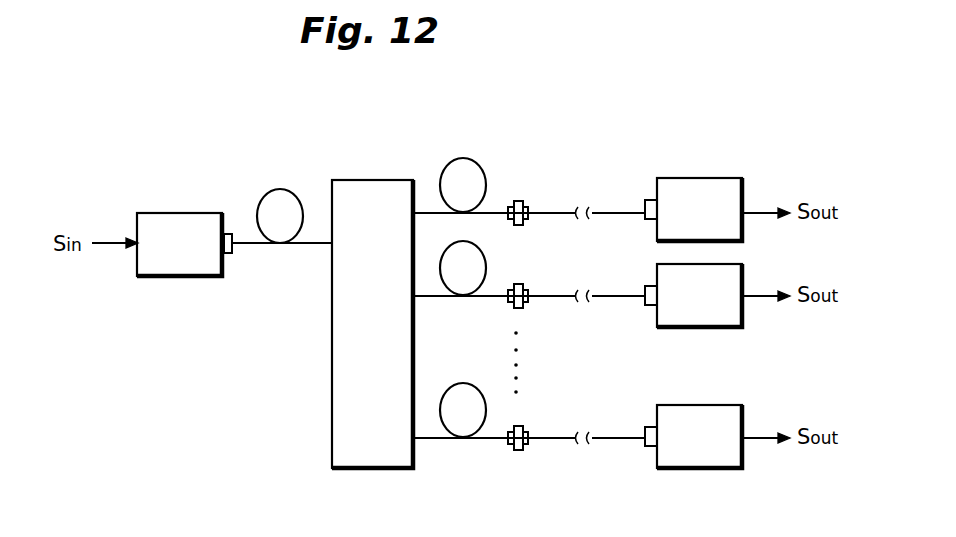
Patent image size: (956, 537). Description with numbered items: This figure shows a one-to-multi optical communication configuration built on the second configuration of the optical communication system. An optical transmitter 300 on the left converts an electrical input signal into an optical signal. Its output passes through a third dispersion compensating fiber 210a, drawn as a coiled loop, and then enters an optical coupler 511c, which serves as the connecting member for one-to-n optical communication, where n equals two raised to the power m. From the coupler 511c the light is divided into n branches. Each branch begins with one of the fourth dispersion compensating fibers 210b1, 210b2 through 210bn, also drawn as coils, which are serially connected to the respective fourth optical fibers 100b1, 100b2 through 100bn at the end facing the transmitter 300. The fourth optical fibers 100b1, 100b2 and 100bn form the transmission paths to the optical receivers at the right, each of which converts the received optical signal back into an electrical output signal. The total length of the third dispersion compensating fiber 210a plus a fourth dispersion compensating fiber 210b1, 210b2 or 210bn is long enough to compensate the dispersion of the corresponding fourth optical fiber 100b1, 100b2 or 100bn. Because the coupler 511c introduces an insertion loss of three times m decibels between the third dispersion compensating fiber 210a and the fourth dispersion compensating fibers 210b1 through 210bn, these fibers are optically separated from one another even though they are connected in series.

The optical transmitter 300 is at (175, 212).
The third dispersion compensating fiber 210a is at (279, 188).
The optical coupler 511c is at (380, 180).
The fourth dispersion compensating fiber 210b1 is at (485, 163).
The fourth dispersion compensating fiber 210b2 is at (490, 273).
The fourth dispersion compensating fiber 210bn is at (462, 380).
The fourth optical fiber 100b1 is at (569, 207).
The fourth optical fiber 100b2 is at (563, 302).
The fourth optical fiber 100bn is at (558, 438).